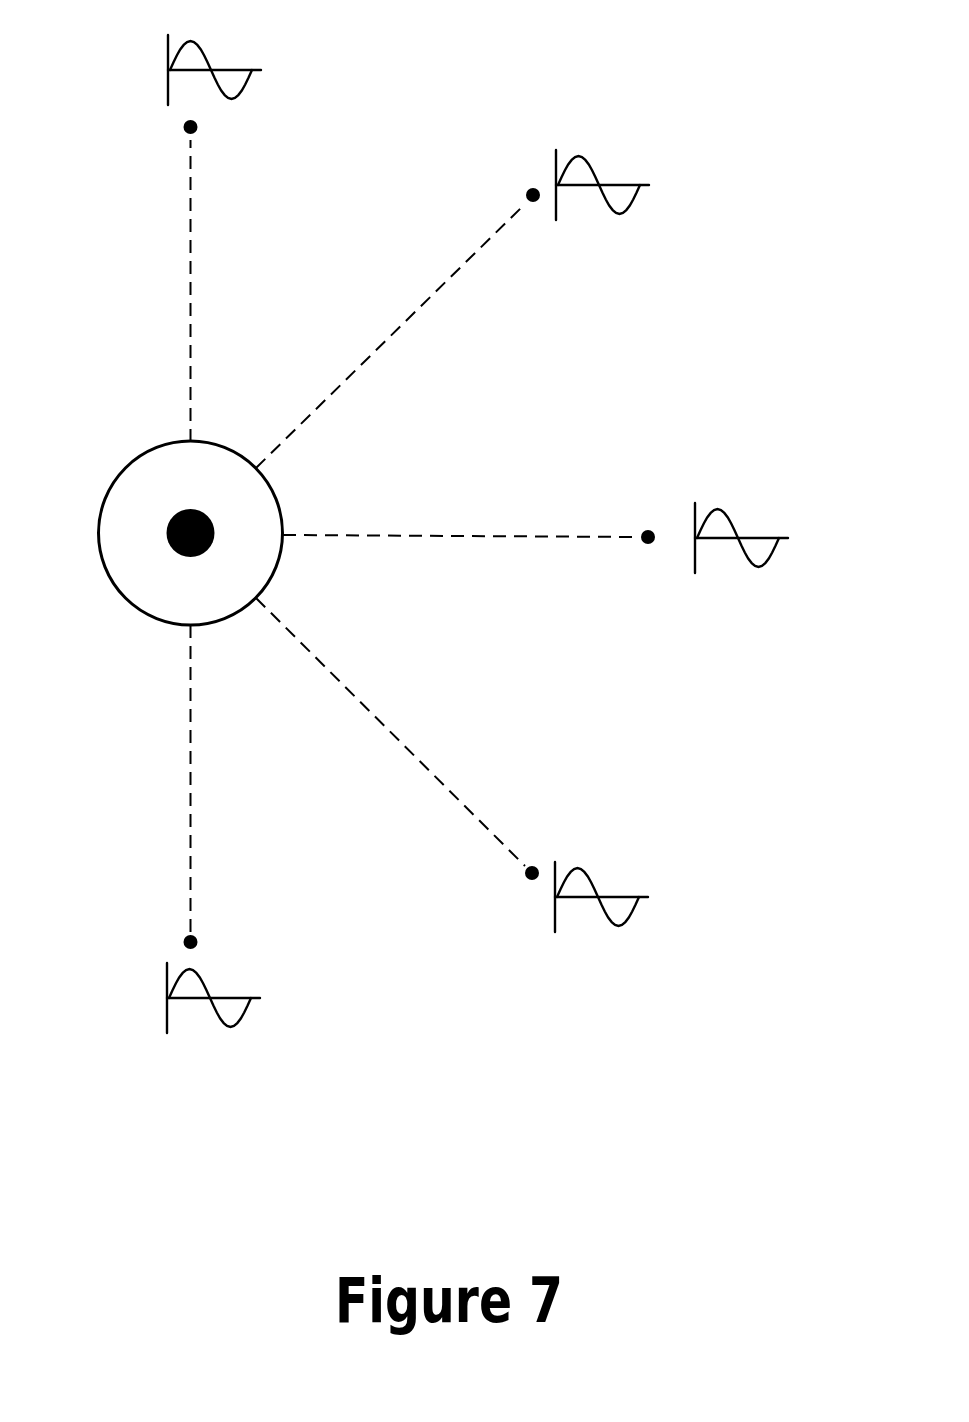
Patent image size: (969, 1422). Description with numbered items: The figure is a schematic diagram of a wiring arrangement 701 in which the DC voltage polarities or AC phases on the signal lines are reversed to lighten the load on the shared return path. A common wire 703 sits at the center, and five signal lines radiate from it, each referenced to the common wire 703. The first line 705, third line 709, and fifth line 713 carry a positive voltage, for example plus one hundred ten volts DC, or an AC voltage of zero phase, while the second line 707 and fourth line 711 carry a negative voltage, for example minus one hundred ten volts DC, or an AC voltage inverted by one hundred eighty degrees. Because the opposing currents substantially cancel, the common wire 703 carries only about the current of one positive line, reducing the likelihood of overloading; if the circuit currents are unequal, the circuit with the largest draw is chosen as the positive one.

The electrode arrangement / system 701 is at (628, 69).
The common wire 703 is at (96, 573).
The first line 705 is at (649, 524).
The second line 707 is at (533, 860).
The third line 709 is at (204, 942).
The fourth line 711 is at (206, 127).
The fifth line 713 is at (535, 209).